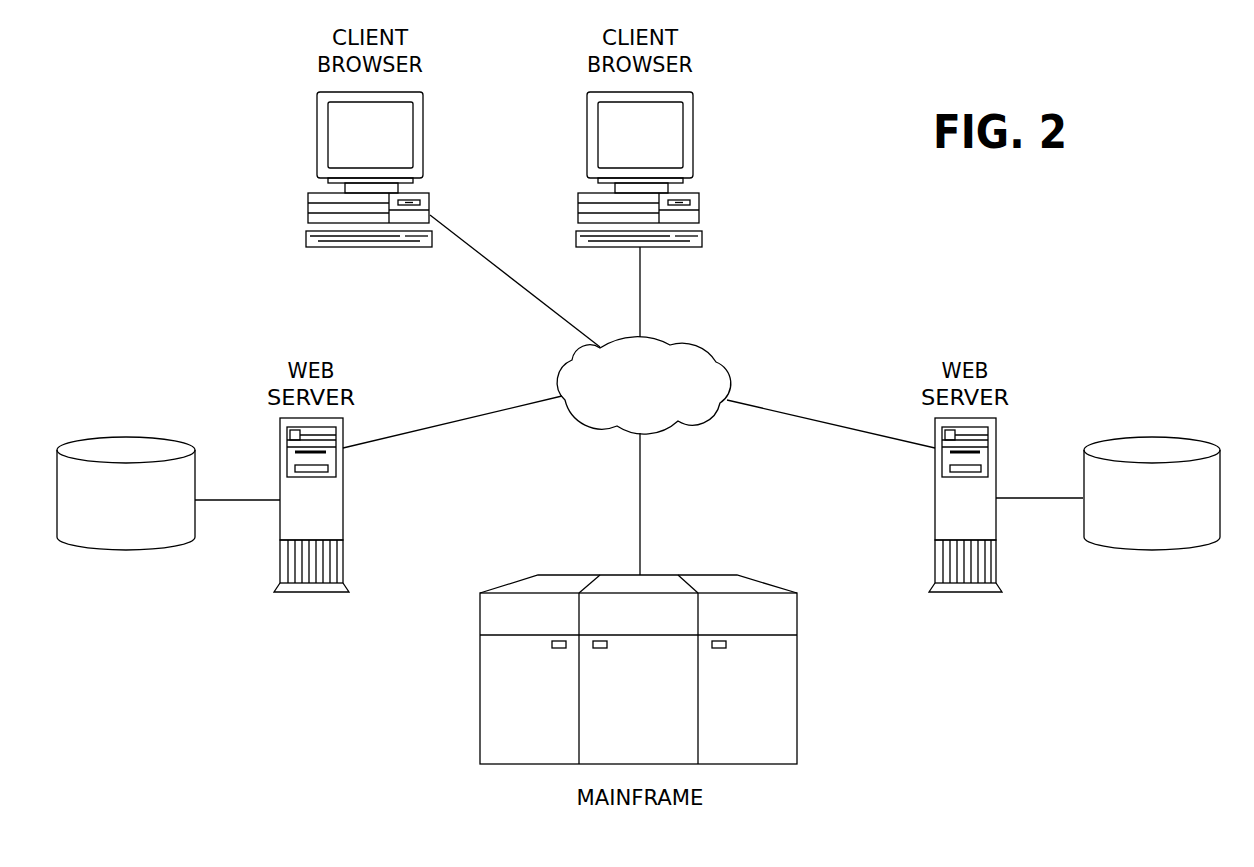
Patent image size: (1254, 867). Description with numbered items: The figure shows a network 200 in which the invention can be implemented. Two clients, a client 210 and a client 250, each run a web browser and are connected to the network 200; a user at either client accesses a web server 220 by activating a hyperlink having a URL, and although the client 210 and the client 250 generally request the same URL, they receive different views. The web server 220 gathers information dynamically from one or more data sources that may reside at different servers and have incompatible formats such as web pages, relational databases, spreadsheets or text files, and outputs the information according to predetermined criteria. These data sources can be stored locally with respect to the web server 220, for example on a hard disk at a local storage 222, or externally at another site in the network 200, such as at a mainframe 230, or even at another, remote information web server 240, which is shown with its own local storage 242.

The network 200 is at (705, 348).
The client 210 is at (699, 193).
The web server 220 is at (343, 503).
The local storage 222 is at (124, 436).
The mainframe 230 is at (725, 575).
The remote information web server 240 is at (935, 502).
The local storage 242 is at (1152, 436).
The client 250 is at (308, 202).